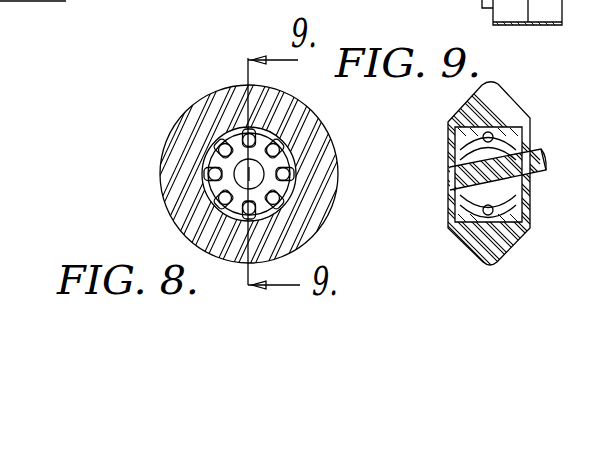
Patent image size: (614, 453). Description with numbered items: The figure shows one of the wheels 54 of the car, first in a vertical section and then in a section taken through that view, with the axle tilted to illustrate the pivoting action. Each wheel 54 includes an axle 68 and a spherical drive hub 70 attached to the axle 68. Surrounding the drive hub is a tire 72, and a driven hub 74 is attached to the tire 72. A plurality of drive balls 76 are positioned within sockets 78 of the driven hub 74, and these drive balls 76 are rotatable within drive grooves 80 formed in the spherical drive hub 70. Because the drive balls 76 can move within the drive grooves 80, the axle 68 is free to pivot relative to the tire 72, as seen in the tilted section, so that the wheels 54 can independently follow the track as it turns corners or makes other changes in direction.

In FIG. 8, the wheel 54 is at (228, 80).
In FIG. 9, the wheel 54 is at (508, 89).
In FIG. 8, the axle 68 is at (250, 174).
In FIG. 9, the axle 68 is at (540, 162).
In FIG. 8, the spherical drive hub 70 is at (298, 197).
In FIG. 9, the spherical drive hub 70 is at (448, 167).
In FIG. 8, the tire 72 is at (214, 100).
In FIG. 9, the tire 72 is at (492, 83).
In FIG. 8, the driven hub 74 is at (185, 233).
In FIG. 9, the driven hub 74 is at (448, 203).
In FIG. 8, the drive balls 76 is at (180, 194).
In FIG. 9, the drive balls 76 is at (512, 108).
In FIG. 8, the sockets 78 is at (185, 164).
In FIG. 9, the sockets 78 is at (466, 104).
In FIG. 8, the drive grooves 80 is at (210, 175).
In FIG. 9, the drive grooves 80 is at (462, 141).